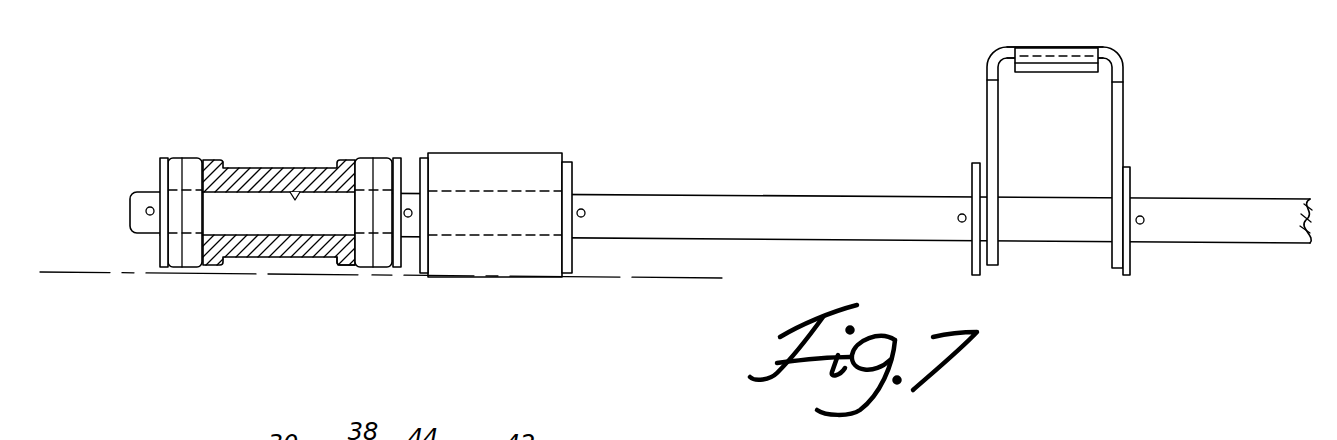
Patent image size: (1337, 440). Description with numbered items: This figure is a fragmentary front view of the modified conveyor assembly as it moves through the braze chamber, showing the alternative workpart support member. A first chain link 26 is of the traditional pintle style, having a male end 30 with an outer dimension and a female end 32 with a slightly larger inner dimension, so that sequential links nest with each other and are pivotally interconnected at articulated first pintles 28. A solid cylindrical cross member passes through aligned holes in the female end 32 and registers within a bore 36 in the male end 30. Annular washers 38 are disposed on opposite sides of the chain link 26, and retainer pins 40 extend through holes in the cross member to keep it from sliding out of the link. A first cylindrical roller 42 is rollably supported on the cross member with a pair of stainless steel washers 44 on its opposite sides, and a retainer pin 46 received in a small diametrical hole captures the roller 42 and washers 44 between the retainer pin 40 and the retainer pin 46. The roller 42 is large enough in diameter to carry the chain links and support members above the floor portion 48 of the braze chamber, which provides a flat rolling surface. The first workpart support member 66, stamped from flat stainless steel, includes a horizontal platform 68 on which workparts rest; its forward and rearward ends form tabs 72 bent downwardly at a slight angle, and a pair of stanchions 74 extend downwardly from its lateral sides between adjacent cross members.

The first chain link 26 is at (337, 267).
The first pintle 28 is at (267, 222).
The male end 30 is at (258, 163).
The female end 32 is at (377, 160).
The bore 36 is at (297, 196).
The annular washer 38 is at (163, 158).
The retainer pin 40 is at (148, 216).
The first cylindrical roller 42 is at (520, 160).
The stainless steel washer 44 is at (425, 158).
The retainer pin 46 is at (585, 211).
The floor portion 48 is at (623, 275).
The first workpart support member 66 is at (1125, 88).
The platform 68 is at (1085, 47).
The tab 72 is at (1058, 73).
The stanchion 74 is at (1120, 135).